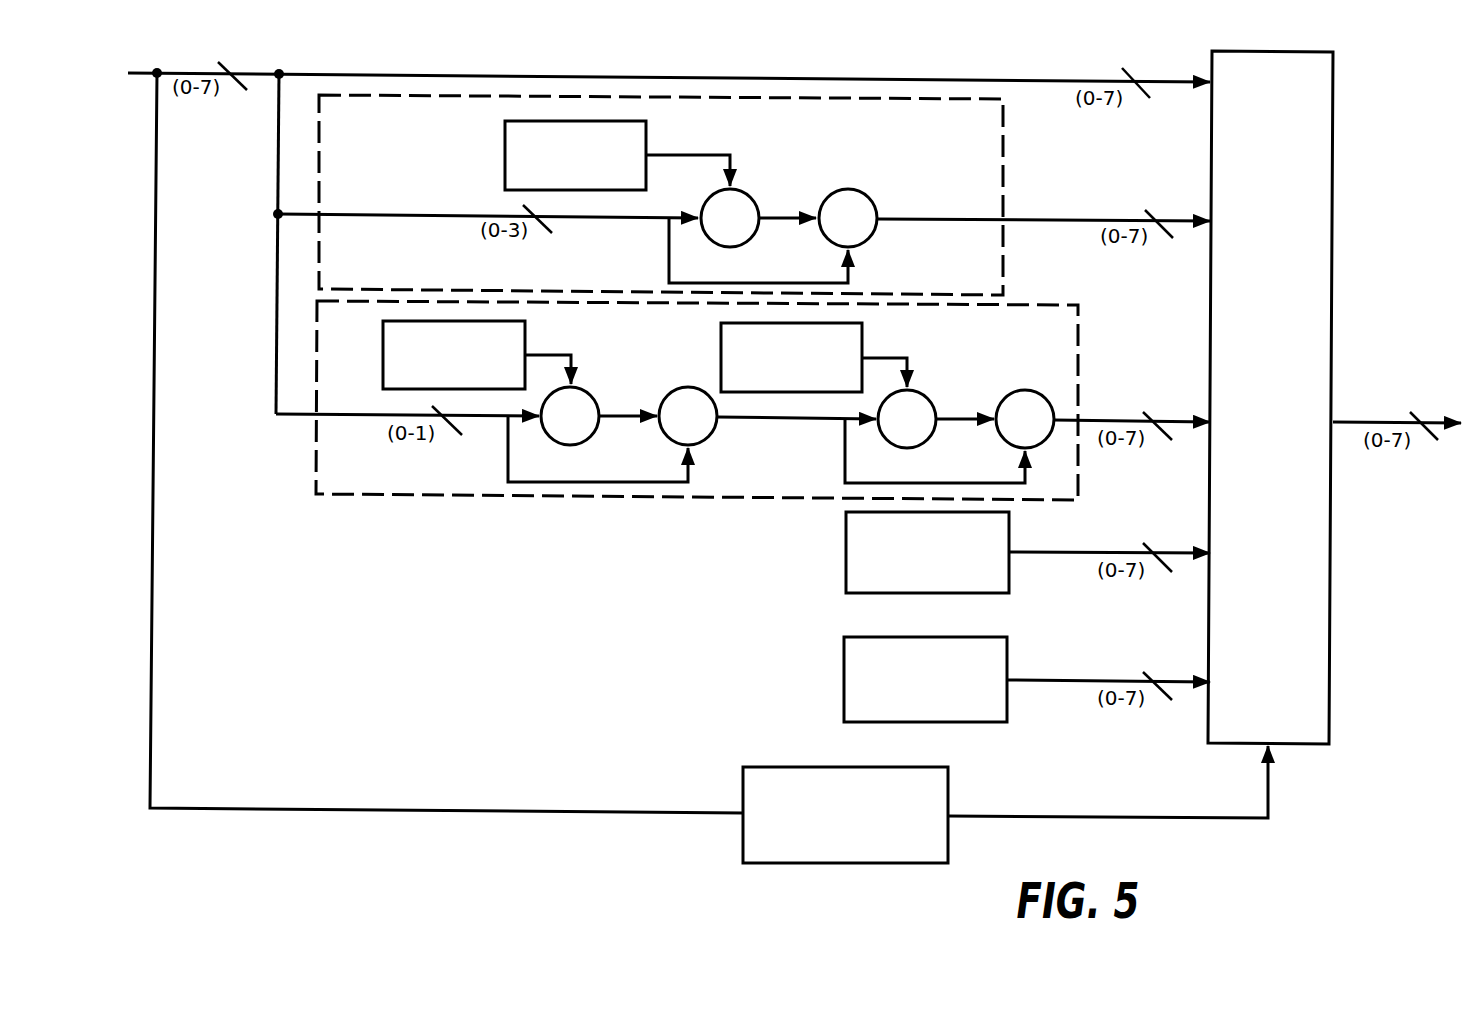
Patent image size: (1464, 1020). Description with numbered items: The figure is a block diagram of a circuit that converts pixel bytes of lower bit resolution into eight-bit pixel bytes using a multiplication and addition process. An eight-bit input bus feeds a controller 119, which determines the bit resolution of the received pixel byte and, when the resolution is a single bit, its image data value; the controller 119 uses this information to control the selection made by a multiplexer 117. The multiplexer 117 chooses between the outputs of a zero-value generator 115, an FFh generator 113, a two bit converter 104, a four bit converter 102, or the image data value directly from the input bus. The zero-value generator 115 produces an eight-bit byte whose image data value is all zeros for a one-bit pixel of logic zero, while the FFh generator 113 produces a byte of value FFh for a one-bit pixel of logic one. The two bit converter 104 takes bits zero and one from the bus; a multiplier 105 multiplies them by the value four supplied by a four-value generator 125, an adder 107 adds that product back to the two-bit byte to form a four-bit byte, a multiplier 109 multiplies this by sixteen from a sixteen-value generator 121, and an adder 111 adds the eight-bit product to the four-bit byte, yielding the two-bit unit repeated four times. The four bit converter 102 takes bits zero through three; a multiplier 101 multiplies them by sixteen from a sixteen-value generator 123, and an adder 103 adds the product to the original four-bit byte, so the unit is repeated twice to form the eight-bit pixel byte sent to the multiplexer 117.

The multiplier 101 is at (743, 190).
The four bit converter 102 is at (1003, 257).
The adder 103 is at (866, 196).
The two bit converter 104 is at (1078, 362).
The multiplier 105 is at (581, 398).
The adder 107 is at (712, 436).
The multiplier 109 is at (920, 398).
The adder 111 is at (1025, 390).
The FFh generator 113 is at (846, 547).
The 00h generator 115 is at (844, 676).
The multiplexer 117 is at (1333, 232).
The controller 119 is at (773, 767).
The 10000 generator 121 is at (721, 358).
The 10000 generator 123 is at (505, 155).
The 100 generator 125 is at (383, 355).